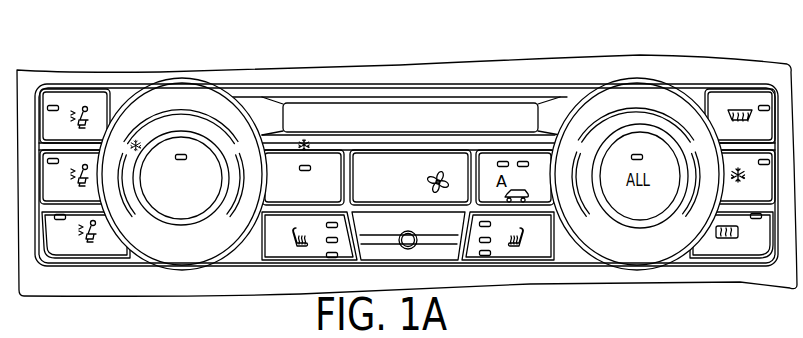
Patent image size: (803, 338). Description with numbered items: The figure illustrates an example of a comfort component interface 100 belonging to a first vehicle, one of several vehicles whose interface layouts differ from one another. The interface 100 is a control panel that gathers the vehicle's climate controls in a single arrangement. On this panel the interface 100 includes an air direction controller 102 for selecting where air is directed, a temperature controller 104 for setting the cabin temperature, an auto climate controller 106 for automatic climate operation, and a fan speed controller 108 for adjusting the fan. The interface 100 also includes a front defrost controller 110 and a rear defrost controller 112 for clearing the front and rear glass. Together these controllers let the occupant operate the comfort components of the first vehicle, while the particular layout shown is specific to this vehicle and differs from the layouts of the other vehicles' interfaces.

The interface 100 is at (495, 63).
The air direction controller 102 is at (80, 91).
The temperature controller 104 is at (188, 128).
The auto climate controller 106 is at (332, 183).
The fan speed controller 108 is at (418, 181).
The front defrost controller 110 is at (722, 118).
The rear defrost controller 112 is at (725, 238).